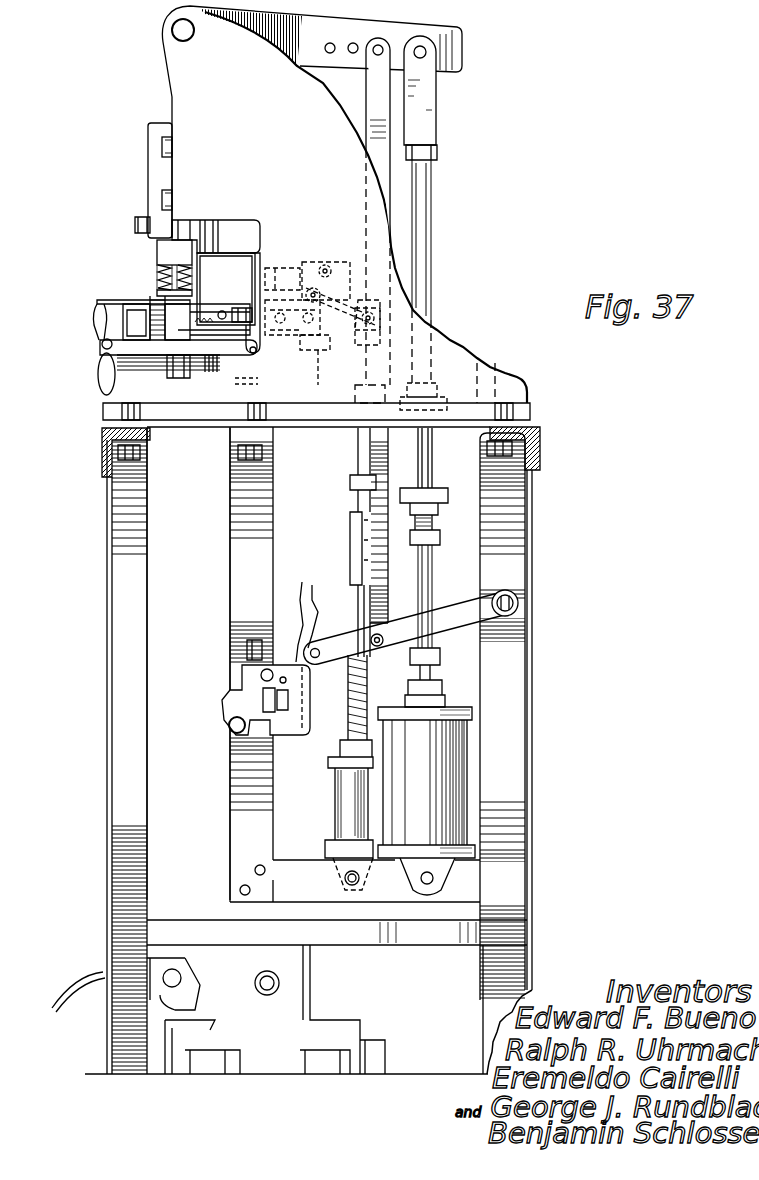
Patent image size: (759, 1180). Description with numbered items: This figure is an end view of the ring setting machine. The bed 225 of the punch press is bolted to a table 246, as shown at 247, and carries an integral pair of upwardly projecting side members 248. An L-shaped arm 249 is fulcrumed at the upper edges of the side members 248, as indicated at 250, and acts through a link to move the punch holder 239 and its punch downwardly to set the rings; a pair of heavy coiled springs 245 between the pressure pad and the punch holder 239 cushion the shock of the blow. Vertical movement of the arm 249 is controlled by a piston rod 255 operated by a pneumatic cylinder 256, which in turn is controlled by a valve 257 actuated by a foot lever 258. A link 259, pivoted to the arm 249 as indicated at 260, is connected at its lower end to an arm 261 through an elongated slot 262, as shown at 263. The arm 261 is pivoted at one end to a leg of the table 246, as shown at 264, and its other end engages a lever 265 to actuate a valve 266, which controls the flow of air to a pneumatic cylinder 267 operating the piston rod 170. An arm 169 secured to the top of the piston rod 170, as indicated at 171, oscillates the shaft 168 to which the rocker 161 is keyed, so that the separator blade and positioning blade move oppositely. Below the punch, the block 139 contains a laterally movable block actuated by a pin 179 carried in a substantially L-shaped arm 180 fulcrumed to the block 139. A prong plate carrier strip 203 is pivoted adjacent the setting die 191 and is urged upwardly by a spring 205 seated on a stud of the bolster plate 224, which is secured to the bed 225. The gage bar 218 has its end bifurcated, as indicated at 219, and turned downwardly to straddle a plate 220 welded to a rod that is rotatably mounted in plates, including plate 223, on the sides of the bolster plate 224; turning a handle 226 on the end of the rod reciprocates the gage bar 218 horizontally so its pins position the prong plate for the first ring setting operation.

The block 139 is at (243, 253).
The rocker 161 is at (318, 264).
The shaft 168 is at (322, 350).
The arm 169 is at (340, 282).
The piston rod 170 is at (362, 455).
The securing point of arm to piston rod 171 is at (375, 310).
The pin 179 is at (222, 311).
The arm 180 is at (240, 310).
The setting die 191 is at (112, 352).
The prong plate carrier strip 203 is at (122, 300).
The spring 205 is at (150, 300).
The gage bar 218 is at (97, 302).
The bifurcated end of gage bar 219 is at (93, 320).
The plate 220 is at (125, 332).
The plate 223 is at (132, 352).
The bolster plate 224 is at (233, 348).
The bed 225 is at (187, 410).
The handle 226 is at (98, 392).
The punch holder 239 is at (174, 265).
The coiled springs 245 is at (152, 265).
The table 246 is at (105, 666).
The bolts 247 is at (120, 412).
The side members 248 is at (188, 68).
The L-shaped arm 249 is at (455, 50).
The fulcrum 250 is at (172, 30).
The piston rod 255 is at (431, 193).
The pneumatic cylinder 256 is at (448, 776).
The valve 257 is at (305, 975).
The foot lever 258 is at (75, 985).
The link 259 is at (372, 90).
The pivot 260 is at (372, 52).
The arm 261 is at (456, 608).
The elongated slot 262 is at (360, 614).
The connection 263 is at (381, 646).
The pivot 264 is at (520, 603).
The lever 265 is at (302, 588).
The valve 266 is at (235, 708).
The pneumatic cylinder 267 is at (348, 795).